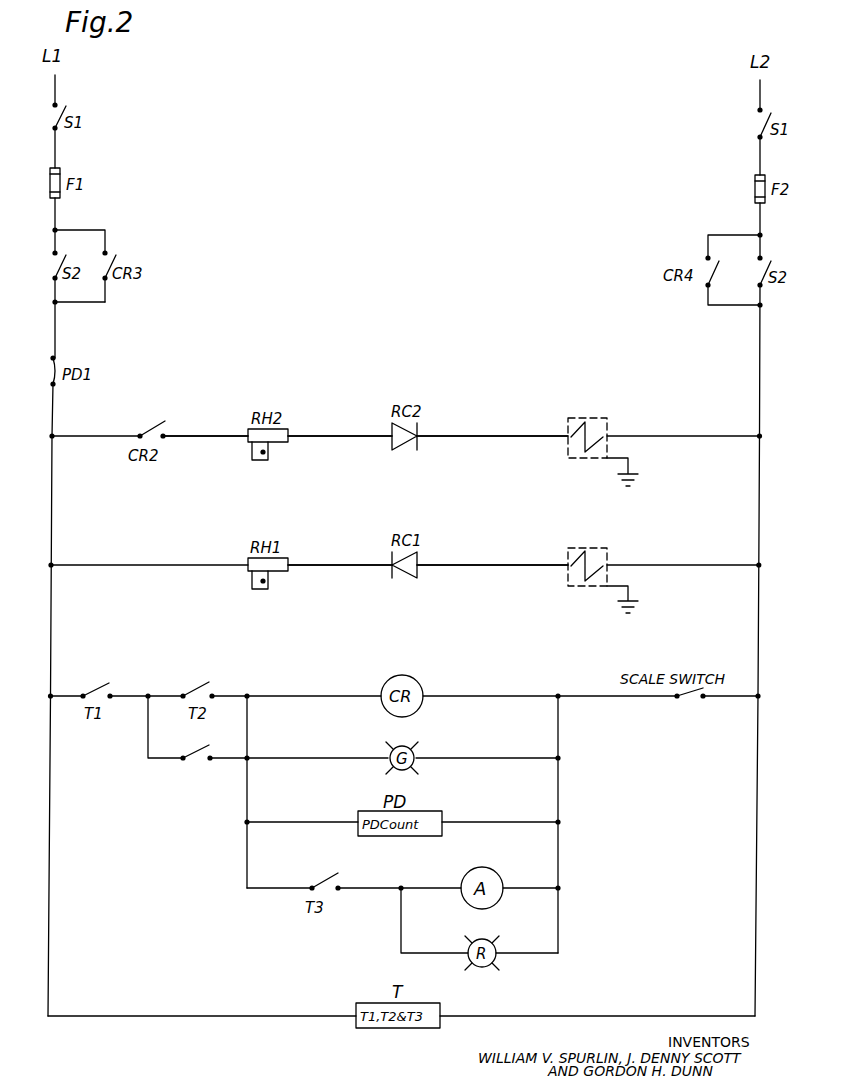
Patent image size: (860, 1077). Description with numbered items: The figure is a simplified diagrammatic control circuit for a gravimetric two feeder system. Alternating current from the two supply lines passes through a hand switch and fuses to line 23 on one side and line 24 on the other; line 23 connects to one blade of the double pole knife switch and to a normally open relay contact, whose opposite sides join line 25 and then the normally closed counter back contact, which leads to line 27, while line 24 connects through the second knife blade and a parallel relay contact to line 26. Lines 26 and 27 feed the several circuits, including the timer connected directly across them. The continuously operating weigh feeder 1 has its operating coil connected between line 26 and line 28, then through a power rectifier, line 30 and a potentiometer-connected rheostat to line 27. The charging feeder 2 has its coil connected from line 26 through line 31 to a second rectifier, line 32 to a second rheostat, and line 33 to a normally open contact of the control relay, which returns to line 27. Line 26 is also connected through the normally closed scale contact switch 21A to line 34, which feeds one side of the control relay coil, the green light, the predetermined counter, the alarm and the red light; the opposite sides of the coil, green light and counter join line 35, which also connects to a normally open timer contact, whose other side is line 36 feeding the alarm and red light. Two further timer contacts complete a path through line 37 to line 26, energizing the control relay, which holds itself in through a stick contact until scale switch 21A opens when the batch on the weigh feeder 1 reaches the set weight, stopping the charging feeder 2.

The weigh feeder 1 is at (590, 548).
The charging feeder 2 is at (590, 418).
The scale contact switch 21A is at (687, 707).
The line 23 is at (55, 230).
The line 24 is at (760, 235).
The line 25 is at (55, 302).
The line 26 is at (760, 436).
The line 27 is at (52, 436).
The line 28 is at (509, 543).
The line 30 is at (351, 541).
The line 31 is at (501, 412).
The line 32 is at (349, 411).
The line 33 is at (227, 411).
The line 34 is at (560, 696).
The line 35 is at (247, 696).
The line 36 is at (414, 871).
The line 37 is at (148, 696).